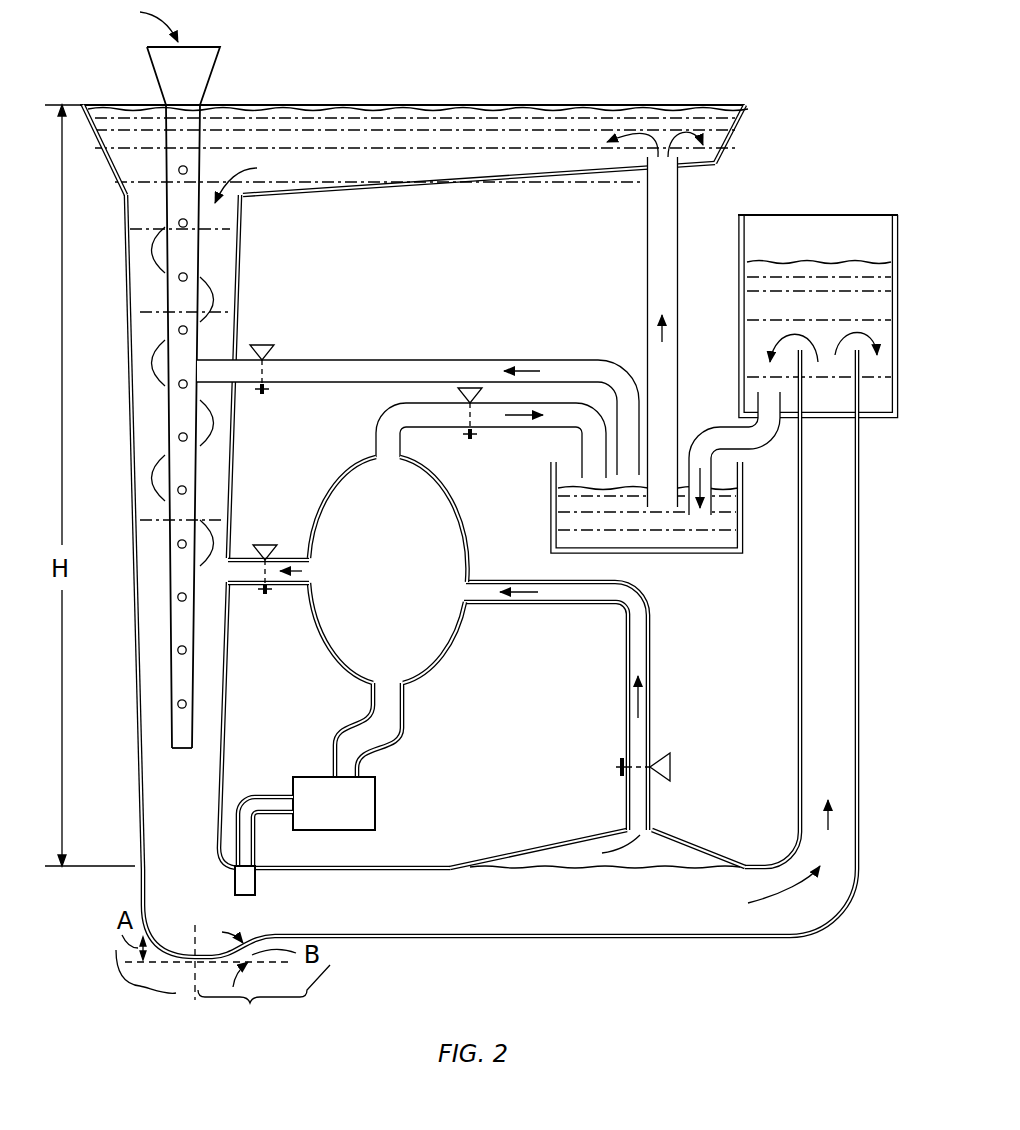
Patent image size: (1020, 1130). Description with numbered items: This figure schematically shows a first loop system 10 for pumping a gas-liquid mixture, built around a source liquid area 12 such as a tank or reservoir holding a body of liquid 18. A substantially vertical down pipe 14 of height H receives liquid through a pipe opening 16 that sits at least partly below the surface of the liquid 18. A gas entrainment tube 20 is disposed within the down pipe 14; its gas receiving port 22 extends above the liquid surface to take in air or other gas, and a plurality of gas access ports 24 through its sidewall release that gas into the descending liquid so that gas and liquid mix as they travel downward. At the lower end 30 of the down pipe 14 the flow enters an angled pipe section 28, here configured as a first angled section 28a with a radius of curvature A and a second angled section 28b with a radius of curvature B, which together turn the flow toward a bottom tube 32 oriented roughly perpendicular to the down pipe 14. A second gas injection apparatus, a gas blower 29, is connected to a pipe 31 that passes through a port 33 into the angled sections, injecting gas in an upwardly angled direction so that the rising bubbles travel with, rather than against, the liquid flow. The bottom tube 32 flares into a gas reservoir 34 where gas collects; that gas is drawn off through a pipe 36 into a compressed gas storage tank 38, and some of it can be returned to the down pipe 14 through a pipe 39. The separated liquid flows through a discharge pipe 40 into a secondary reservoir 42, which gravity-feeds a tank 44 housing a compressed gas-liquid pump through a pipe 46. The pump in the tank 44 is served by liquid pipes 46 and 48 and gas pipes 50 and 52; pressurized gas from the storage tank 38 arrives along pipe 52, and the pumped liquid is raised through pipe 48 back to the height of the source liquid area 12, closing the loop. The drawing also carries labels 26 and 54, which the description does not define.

The first loop system 10 is at (836, 172).
The source liquid area 12 is at (471, 136).
The down pipe 14 is at (240, 446).
The pipe opening 16 is at (146, 207).
The liquid 18 is at (386, 106).
The gas entrainment tube 20 is at (168, 440).
The gas receiving port 22 is at (211, 75).
The gas access ports 24 is at (188, 276).
The tube bottom end 26 is at (178, 752).
The angled pipe section 28 is at (175, 928).
The first angled section 28a is at (197, 982).
The second angled section 28b is at (262, 983).
The gas blower 29 is at (377, 805).
The lower end 30 is at (152, 798).
The pipe 31 is at (273, 797).
The bottom tube 32 is at (392, 940).
The port 33 is at (252, 868).
The gas reservoir 34 is at (678, 848).
The pipe 36 is at (624, 722).
The compressed gas storage tank 38 is at (432, 653).
The pipe 39 is at (280, 546).
The discharge pipe 40 is at (859, 628).
The secondary reservoir 42 is at (742, 324).
The tank 44 is at (688, 553).
The pipe 46 is at (771, 455).
The pipe 48 is at (644, 272).
The gas pipe 50 is at (410, 358).
The gas pipe 52 is at (523, 430).
The valve 54 is at (263, 344).